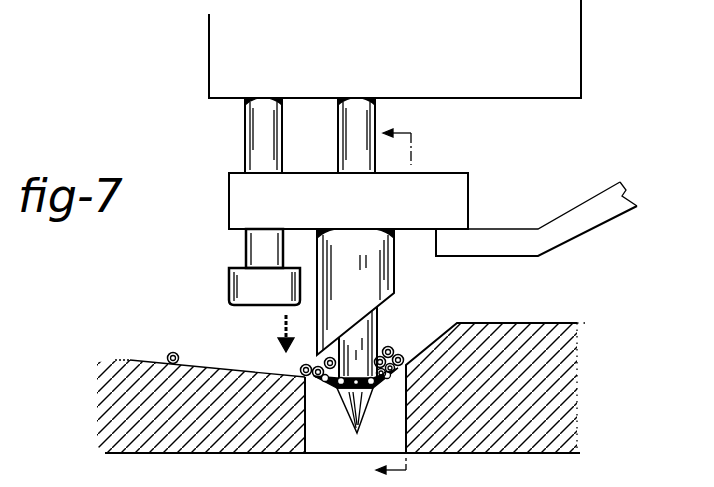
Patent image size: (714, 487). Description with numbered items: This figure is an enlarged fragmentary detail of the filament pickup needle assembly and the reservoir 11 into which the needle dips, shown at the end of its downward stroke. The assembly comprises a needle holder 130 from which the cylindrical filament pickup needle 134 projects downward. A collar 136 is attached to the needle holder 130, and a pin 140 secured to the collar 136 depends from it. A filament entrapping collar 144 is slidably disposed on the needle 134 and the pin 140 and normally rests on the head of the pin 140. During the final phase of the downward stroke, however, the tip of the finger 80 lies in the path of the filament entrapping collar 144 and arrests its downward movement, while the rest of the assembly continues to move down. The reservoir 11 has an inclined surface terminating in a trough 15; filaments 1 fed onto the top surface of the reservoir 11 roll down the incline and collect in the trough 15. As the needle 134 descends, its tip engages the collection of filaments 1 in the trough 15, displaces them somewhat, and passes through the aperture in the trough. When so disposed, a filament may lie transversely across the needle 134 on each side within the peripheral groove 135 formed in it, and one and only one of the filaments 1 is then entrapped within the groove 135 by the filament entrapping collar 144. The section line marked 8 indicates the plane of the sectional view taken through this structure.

The collar 136 is at (574, 77).
The pin 140 is at (246, 128).
The needle holder 130 is at (376, 113).
The section line 8- 8 is at (401, 304).
The filament entrapping collar 144 is at (463, 188).
The finger 80 is at (587, 232).
The filament pickup needle 134 is at (378, 325).
The peripheral groove 135 is at (362, 395).
The filaments 1 is at (180, 355).
The trough 15 is at (300, 372).
The reservoir 11 is at (228, 453).